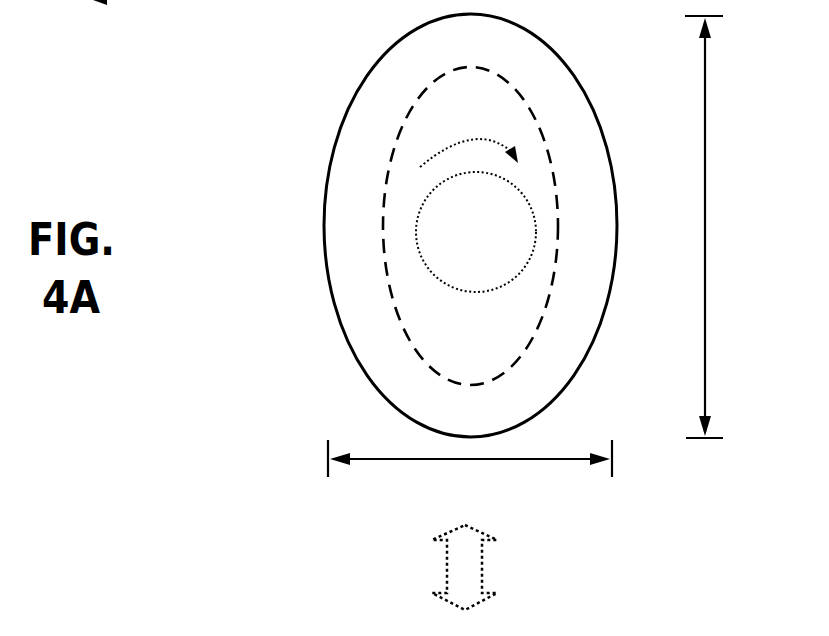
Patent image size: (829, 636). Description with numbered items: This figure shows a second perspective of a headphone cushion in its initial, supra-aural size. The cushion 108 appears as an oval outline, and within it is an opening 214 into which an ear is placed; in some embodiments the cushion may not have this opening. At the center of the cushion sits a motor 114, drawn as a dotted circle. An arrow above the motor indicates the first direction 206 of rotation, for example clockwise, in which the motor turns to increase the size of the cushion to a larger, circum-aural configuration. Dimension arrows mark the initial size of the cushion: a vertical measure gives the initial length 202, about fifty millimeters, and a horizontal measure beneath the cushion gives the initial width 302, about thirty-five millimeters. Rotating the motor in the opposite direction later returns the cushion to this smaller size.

The cushion 108 is at (340, 128).
The opening 214 is at (548, 152).
The motor 114 is at (500, 287).
The first direction 206 is at (511, 151).
The initial length 202 is at (693, 238).
The initial width 302 is at (485, 491).